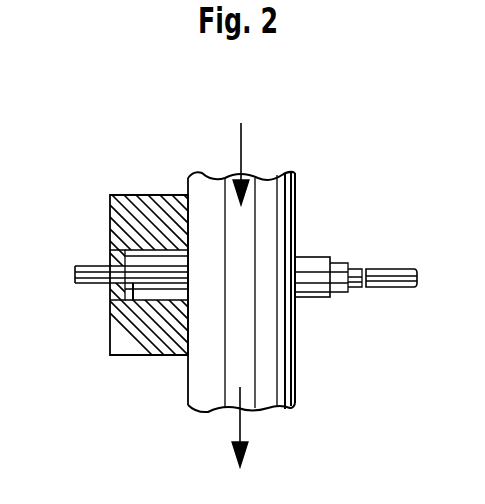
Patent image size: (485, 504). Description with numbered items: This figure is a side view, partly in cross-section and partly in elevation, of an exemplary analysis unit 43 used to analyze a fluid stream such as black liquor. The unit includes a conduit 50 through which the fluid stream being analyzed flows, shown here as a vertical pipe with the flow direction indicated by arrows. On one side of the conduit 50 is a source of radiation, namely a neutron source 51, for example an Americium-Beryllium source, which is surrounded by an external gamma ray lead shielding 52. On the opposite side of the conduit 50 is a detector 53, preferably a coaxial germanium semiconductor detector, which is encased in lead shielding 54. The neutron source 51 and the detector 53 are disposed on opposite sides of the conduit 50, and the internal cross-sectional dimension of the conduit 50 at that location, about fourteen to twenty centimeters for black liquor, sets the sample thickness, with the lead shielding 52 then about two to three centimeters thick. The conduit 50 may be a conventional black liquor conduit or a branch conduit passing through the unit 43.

The analysis unit 43 is at (208, 317).
The conduit 50 is at (195, 388).
The neutron source 51 is at (393, 275).
The gamma ray shielding 52 is at (315, 263).
The detector 53 is at (130, 302).
The lead shielding 54 is at (113, 225).